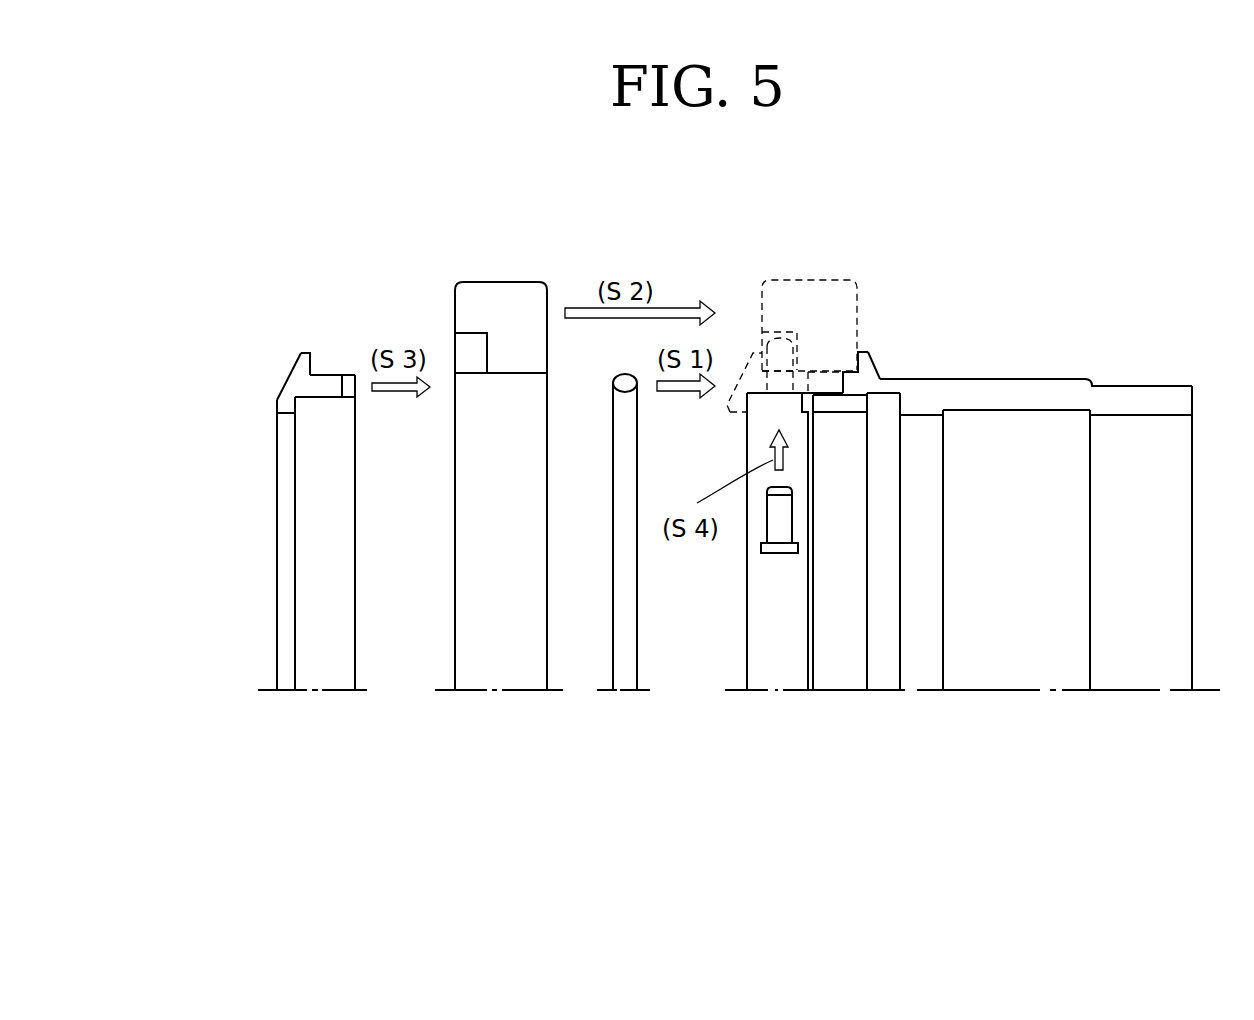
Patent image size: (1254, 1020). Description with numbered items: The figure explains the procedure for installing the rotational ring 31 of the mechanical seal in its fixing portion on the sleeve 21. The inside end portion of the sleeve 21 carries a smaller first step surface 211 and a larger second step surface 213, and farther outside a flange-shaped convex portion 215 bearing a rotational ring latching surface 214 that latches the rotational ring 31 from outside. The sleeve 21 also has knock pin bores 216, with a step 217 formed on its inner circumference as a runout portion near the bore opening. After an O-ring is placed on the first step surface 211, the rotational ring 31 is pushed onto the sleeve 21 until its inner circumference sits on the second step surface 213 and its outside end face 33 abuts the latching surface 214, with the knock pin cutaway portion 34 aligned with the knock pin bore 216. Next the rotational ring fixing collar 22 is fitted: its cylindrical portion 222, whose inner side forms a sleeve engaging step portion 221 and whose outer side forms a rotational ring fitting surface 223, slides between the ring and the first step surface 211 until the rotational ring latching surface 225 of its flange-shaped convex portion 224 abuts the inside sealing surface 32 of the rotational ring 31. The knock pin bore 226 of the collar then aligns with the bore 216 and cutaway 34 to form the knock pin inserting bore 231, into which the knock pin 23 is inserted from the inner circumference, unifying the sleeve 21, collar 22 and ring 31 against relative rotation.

The sleeve 21 is at (1057, 393).
The first step surface 211 is at (895, 386).
The second step surface 213 is at (833, 372).
The rotational ring latching surface 214 is at (862, 352).
The flange-shaped convex portion 215 is at (880, 377).
The knock pin bore 216 is at (785, 352).
The step 217 is at (750, 414).
The rotational ring fixing collar 22 is at (292, 382).
The sleeve engaging step portion 221 is at (300, 405).
The cylindrical portion 222 is at (353, 390).
The rotational ring fitting surface 223 is at (347, 380).
The flange-shaped convex portion 224 is at (293, 372).
The rotational ring latching surface 225 is at (320, 368).
The knock pin bore 226 is at (316, 380).
The knock pin 23 is at (780, 530).
The knock pin inserting bore 231 is at (800, 430).
The rotational ring 31 is at (513, 298).
The inside sealing surface 32 is at (453, 297).
The outside end face 33 is at (547, 298).
The knock pin cutaway portion 34 is at (470, 342).